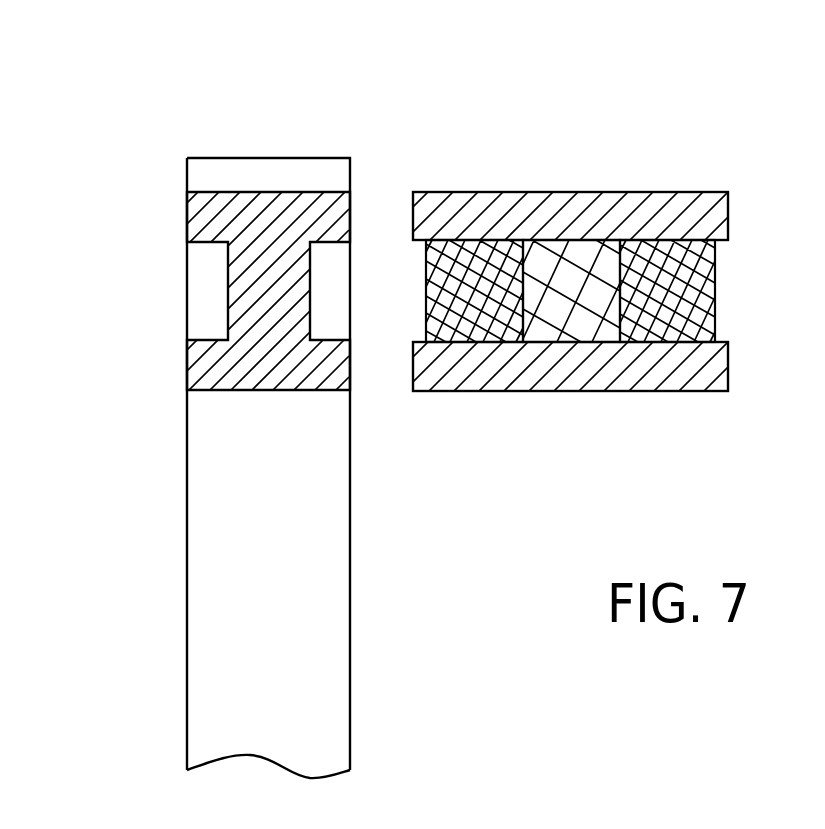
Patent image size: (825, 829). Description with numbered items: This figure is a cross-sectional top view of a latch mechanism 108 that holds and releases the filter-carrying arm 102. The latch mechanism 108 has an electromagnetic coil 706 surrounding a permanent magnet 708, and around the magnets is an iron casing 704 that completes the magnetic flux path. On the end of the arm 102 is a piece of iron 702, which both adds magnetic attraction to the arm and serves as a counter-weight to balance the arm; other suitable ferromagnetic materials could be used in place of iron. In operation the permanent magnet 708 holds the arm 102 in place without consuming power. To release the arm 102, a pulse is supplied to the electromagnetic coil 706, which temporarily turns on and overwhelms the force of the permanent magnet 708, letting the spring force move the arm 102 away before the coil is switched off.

The arm 102 is at (187, 437).
The latch mechanism 108 is at (367, 122).
The iron 702 is at (187, 213).
The iron casing 704 is at (497, 192).
The electromagnetic coil 706 is at (497, 310).
The permanent magnet 708 is at (593, 308).